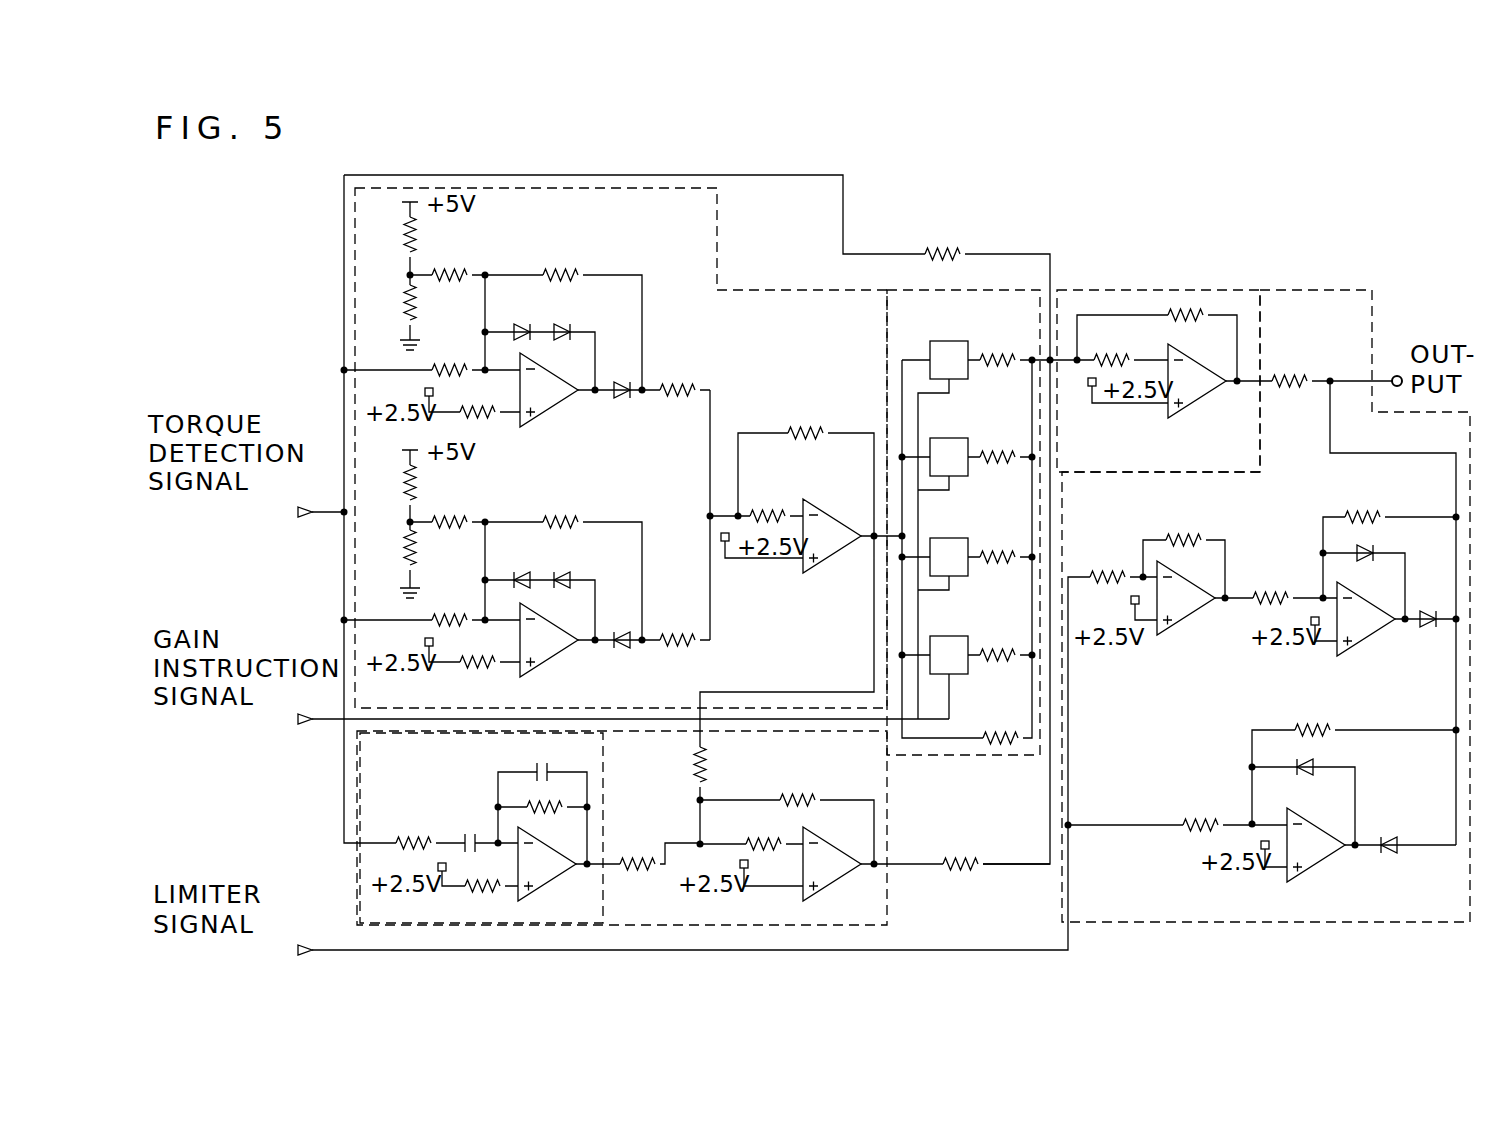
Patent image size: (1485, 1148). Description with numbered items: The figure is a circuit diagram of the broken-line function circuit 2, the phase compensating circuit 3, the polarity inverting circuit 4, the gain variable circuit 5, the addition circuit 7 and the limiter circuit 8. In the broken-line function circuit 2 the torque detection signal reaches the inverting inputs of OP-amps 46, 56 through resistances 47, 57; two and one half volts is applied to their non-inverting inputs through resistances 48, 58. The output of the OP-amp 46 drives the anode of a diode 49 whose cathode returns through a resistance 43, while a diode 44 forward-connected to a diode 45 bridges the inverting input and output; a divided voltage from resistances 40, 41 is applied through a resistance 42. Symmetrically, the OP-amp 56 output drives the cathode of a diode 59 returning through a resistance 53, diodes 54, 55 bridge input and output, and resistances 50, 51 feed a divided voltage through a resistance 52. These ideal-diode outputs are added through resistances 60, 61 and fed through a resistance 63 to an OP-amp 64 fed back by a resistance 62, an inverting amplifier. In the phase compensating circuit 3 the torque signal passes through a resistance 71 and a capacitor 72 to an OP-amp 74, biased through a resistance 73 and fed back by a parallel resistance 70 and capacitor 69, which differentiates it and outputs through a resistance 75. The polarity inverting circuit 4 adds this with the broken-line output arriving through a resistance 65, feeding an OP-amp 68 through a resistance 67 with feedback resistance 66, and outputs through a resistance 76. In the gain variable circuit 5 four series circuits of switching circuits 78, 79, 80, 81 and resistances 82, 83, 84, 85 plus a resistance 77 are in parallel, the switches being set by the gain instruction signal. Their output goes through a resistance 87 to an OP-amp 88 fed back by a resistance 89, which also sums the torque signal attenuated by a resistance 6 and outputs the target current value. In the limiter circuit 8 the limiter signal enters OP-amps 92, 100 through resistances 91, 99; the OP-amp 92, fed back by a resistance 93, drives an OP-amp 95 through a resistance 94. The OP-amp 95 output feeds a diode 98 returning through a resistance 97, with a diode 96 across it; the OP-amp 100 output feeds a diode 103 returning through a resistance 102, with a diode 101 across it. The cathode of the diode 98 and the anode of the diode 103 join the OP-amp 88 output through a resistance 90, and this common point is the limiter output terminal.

The broken-line function circuit 2 is at (717, 237).
The phase compensating circuit 3 is at (360, 924).
The polarity inverting circuit 4 is at (890, 786).
The gain variable circuit 5 is at (970, 288).
The resistance 6 is at (948, 248).
The addition circuit 7 is at (1130, 290).
The limiter circuit 8 is at (1308, 290).
The resistance 40 is at (404, 262).
The resistance 41 is at (406, 312).
The resistance 42 is at (446, 266).
The resistance 43 is at (560, 268).
The diode 44 is at (520, 330).
The diode 45 is at (567, 330).
The OP-amp 46 is at (557, 420).
The resistance 47 is at (455, 366).
The resistance 48 is at (478, 422).
The diode 49 is at (620, 386).
The resistance 50 is at (404, 512).
The resistance 51 is at (406, 559).
The resistance 52 is at (446, 513).
The resistance 53 is at (560, 515).
The diode 54 is at (520, 577).
The diode 55 is at (567, 577).
The OP-amp 56 is at (557, 670).
The resistance 57 is at (455, 616).
The resistance 58 is at (478, 674).
The diode 59 is at (620, 636).
The resistance 60 is at (680, 380).
The resistance 61 is at (680, 630).
The resistance 62 is at (812, 422).
The resistance 63 is at (770, 508).
The OP-amp 64 is at (820, 574).
The resistance 65 is at (710, 768).
The resistance 66 is at (810, 810).
The resistance 67 is at (766, 838).
The OP-amp 68 is at (828, 876).
The capacitor 69 is at (539, 771).
The resistance 70 is at (537, 814).
The resistance 71 is at (412, 841).
The capacitor 72 is at (468, 841).
The resistance 73 is at (480, 896).
The OP-amp 74 is at (542, 885).
The resistance 75 is at (636, 850).
The resistance 76 is at (966, 854).
The resistance 77 is at (1005, 730).
The switching circuit 78 is at (949, 642).
The switching circuit 79 is at (949, 545).
The switching circuit 80 is at (949, 443).
The switching circuit 81 is at (949, 345).
The resistance 82 is at (1000, 647).
The resistance 83 is at (1000, 550).
The resistance 84 is at (1000, 448).
The resistance 85 is at (1000, 350).
The resistance 87 is at (1128, 354).
The OP-amp 88 is at (1192, 412).
The resistance 89 is at (1181, 324).
The resistance 90 is at (1292, 376).
The resistance 91 is at (1108, 572).
The OP-amp 92 is at (1180, 639).
The resistance 93 is at (1188, 528).
The resistance 94 is at (1275, 592).
The OP-amp 95 is at (1362, 648).
The diode 96 is at (1370, 568).
The resistance 97 is at (1360, 509).
The diode 98 is at (1428, 614).
The resistance 99 is at (1203, 818).
The OP-amp 100 is at (1313, 874).
The diode 101 is at (1316, 786).
The resistance 102 is at (1310, 728).
The diode 103 is at (1388, 834).